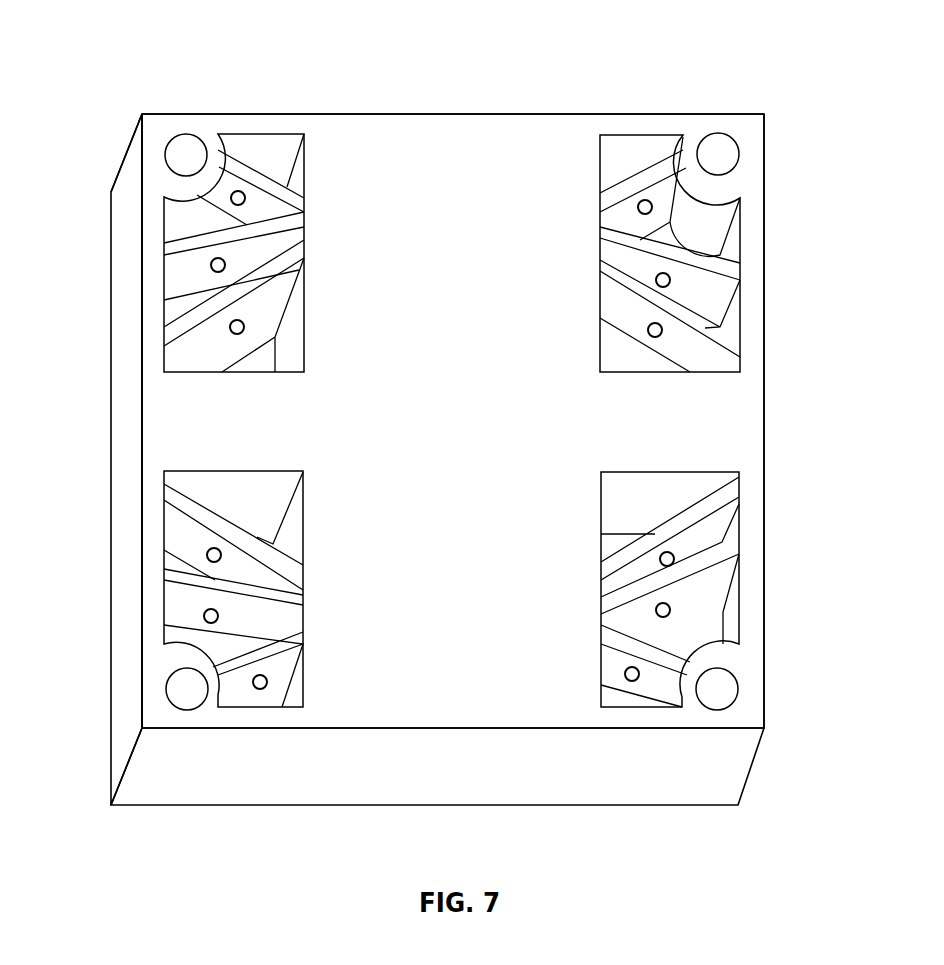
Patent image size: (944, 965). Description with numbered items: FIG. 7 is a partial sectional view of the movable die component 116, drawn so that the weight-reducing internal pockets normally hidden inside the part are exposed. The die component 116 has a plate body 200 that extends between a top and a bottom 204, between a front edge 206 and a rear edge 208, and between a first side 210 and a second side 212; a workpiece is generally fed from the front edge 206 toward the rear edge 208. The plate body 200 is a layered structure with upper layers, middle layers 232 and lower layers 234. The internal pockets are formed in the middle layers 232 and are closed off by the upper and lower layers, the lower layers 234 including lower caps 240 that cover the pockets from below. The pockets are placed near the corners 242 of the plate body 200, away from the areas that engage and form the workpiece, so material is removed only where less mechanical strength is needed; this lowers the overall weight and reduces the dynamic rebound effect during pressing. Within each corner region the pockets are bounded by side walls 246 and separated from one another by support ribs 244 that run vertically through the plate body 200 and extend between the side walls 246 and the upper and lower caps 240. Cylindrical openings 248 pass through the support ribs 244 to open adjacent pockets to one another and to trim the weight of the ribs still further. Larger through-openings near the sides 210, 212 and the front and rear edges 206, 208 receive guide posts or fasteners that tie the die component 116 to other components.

The movable die component 116 is at (746, 52).
The plate body 200 is at (470, 140).
The bottom 204 is at (110, 690).
The front edge 206 is at (505, 787).
The rear edge 208 is at (547, 112).
The first side 210 is at (767, 408).
The second side 212 is at (123, 460).
The middle layers 232 is at (190, 267).
The lower layers 234 is at (182, 308).
The lower caps 240 is at (224, 350).
The corners 242 is at (150, 125).
The support ribs 244 is at (722, 258).
The side walls 246 is at (604, 162).
The openings 248 is at (646, 188).